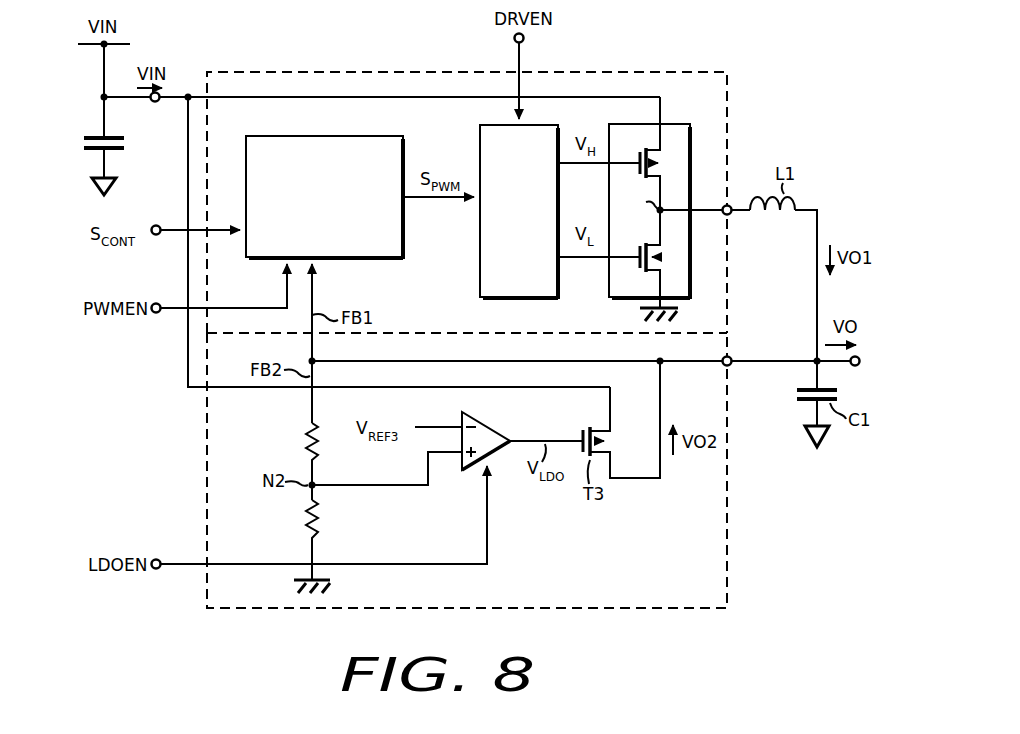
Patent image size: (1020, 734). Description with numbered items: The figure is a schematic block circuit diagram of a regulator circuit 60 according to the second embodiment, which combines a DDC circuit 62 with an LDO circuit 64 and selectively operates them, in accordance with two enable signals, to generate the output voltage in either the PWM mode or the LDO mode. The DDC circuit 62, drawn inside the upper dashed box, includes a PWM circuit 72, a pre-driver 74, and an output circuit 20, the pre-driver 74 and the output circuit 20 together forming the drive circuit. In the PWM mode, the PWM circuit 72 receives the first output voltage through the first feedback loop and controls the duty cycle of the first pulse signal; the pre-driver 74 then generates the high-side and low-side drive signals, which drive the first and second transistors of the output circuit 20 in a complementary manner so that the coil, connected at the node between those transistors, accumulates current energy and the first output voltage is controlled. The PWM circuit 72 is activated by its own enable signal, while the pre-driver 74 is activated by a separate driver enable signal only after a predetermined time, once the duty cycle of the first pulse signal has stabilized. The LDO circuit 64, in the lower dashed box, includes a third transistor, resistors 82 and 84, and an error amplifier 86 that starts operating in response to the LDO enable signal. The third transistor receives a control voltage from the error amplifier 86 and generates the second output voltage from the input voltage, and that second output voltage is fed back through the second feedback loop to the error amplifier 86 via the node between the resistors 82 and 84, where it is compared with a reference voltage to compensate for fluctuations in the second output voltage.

The regulator circuit 60 is at (290, 36).
The DDC circuit 62 is at (727, 92).
The LDO circuit 64 is at (727, 576).
The PWM circuit 72 is at (405, 247).
The pre-driver 74 is at (480, 283).
The output circuit 20 is at (609, 297).
The resistor 82 is at (308, 436).
The resistor 84 is at (308, 524).
The error amplifier 86 is at (483, 418).